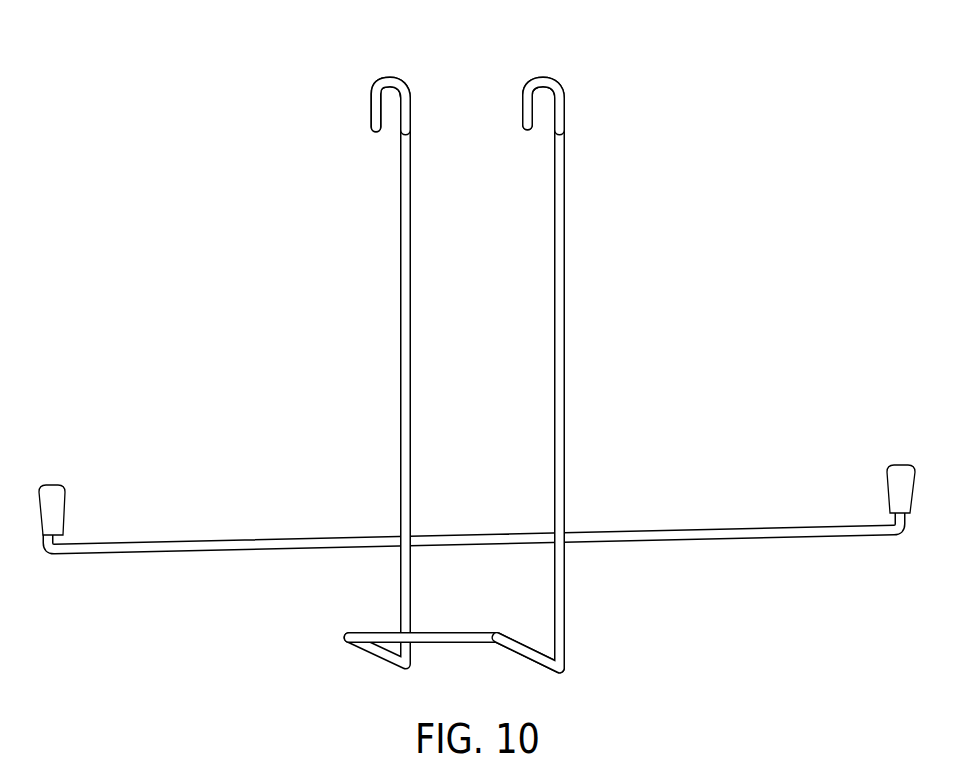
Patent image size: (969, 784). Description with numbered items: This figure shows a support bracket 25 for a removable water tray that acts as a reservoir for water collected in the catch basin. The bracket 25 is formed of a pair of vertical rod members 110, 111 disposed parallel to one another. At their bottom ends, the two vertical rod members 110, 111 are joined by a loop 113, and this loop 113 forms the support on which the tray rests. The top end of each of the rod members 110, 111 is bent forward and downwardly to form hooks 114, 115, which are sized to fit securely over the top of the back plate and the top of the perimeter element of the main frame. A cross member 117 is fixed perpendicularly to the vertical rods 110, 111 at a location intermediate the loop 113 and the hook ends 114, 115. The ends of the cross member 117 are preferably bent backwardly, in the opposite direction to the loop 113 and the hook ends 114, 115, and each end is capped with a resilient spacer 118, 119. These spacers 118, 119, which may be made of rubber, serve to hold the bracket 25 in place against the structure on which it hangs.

The support bracket 25 is at (605, 267).
The vertical rod member 110 is at (399, 367).
The vertical rod member 111 is at (565, 355).
The loop 113 is at (438, 644).
The hook 114 is at (386, 76).
The hook 115 is at (547, 77).
The cross member 117 is at (686, 545).
The resilient spacer 118 is at (57, 500).
The resilient spacer 119 is at (898, 487).